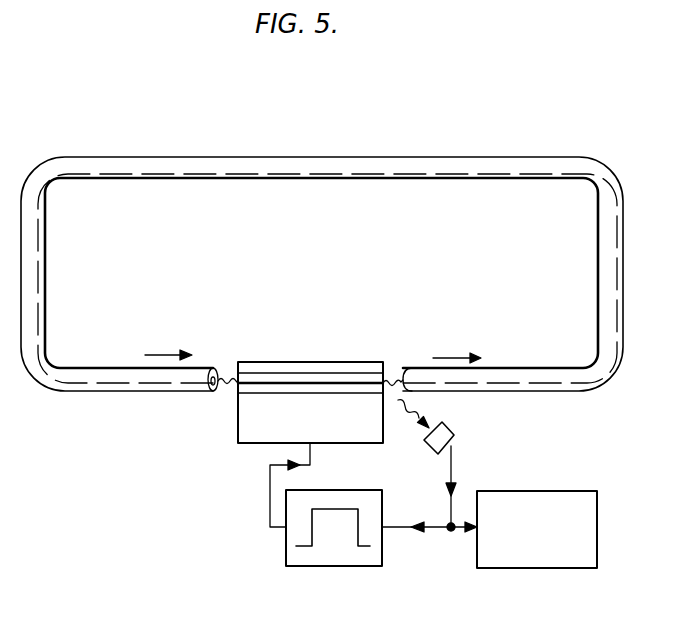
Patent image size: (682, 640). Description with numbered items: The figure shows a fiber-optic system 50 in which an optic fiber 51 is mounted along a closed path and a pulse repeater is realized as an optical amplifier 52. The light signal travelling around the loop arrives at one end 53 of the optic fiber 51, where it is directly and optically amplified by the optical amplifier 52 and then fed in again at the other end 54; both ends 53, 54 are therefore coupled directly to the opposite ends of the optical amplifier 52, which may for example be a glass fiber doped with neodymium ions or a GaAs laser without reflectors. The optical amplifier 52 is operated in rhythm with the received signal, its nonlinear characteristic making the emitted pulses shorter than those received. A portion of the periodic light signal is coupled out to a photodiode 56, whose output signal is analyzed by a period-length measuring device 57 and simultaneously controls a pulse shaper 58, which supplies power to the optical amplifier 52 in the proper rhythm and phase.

The fiber-optic system 50 is at (352, 122).
The optic fiber 51 is at (436, 181).
The optical amplifier 52 is at (302, 362).
The one end of optical fiber 53 is at (204, 373).
The other end of optical fiber 54 is at (413, 379).
The photodiode 56 is at (452, 428).
The period-length measuring device 57 is at (546, 491).
The pulse shaper 58 is at (337, 558).